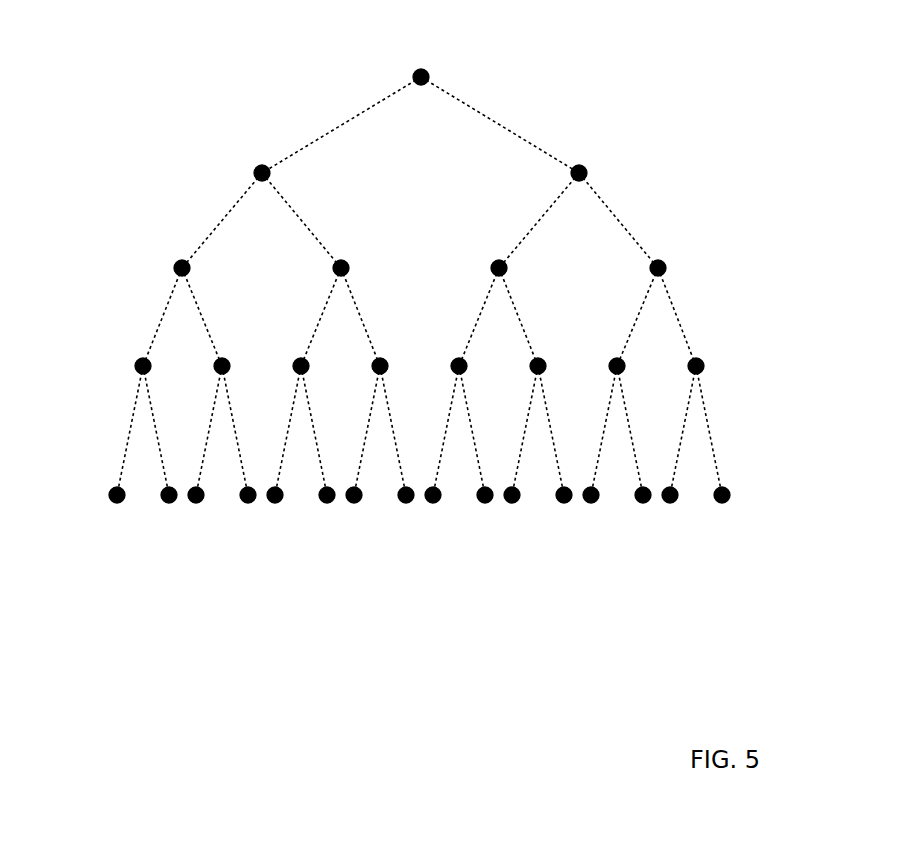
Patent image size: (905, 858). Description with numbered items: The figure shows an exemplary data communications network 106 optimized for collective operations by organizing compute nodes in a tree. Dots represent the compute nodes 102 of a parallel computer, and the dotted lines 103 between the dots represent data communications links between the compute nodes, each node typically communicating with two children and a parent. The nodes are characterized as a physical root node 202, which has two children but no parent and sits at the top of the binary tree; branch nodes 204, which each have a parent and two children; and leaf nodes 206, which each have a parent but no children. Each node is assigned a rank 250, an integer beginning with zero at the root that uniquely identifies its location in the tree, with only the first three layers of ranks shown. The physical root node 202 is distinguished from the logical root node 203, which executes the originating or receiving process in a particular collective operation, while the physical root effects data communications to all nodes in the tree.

The data communications network 106 is at (226, 595).
The dotted lines 103 is at (348, 120).
The physical root node 202 is at (451, 62).
The logical root node 203 is at (150, 249).
The branch nodes 204 is at (743, 132).
The leaf nodes 206 is at (743, 527).
The compute nodes 102 is at (485, 503).
The rank 250 is at (311, 186).